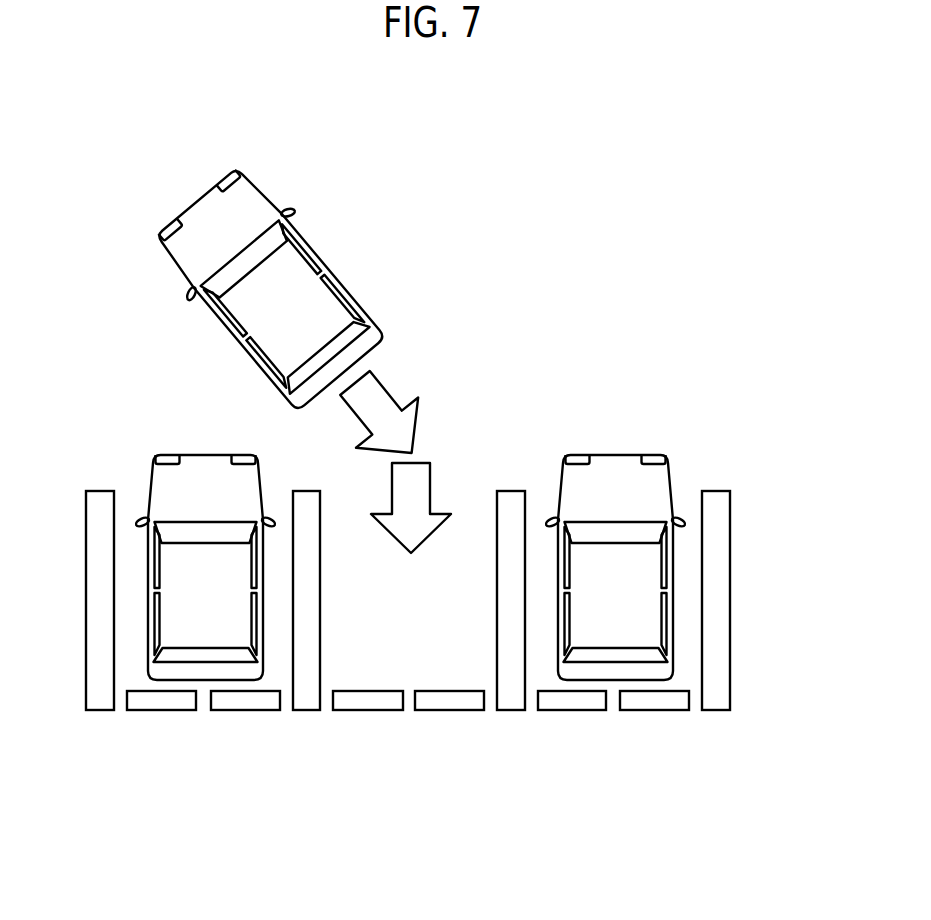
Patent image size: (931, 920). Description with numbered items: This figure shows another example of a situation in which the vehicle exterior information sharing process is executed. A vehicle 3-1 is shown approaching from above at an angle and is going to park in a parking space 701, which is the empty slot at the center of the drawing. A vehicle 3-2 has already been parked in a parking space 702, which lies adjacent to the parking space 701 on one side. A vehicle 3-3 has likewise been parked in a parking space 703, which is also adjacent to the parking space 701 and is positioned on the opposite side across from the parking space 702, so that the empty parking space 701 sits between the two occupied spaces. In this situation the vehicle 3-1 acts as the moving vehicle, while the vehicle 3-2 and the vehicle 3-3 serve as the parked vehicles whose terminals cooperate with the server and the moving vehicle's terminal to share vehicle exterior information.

The vehicle 3-1 is at (320, 255).
The vehicle 3-2 is at (202, 682).
The vehicle 3-3 is at (672, 647).
The parking space 701 is at (472, 662).
The parking space 702 is at (125, 507).
The parking space 703 is at (696, 503).